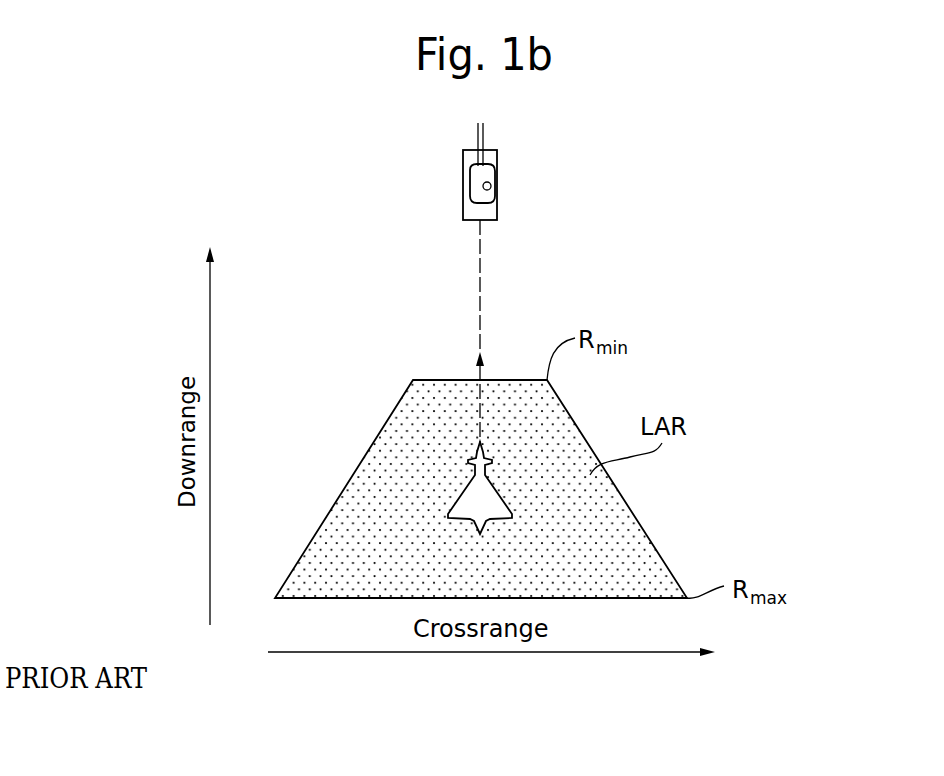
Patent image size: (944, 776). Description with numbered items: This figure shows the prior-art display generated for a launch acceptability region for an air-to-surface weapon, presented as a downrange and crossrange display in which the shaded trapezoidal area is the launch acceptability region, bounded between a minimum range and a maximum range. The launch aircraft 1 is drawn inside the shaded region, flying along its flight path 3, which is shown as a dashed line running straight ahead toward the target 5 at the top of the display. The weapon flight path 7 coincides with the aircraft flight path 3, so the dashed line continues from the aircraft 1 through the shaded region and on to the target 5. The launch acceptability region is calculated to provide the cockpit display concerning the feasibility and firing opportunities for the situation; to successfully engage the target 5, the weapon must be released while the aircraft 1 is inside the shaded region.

The launch aircraft 1 is at (470, 500).
The flight path 3 is at (475, 376).
The target 5 is at (463, 183).
The weapon flight path 7 is at (481, 268).